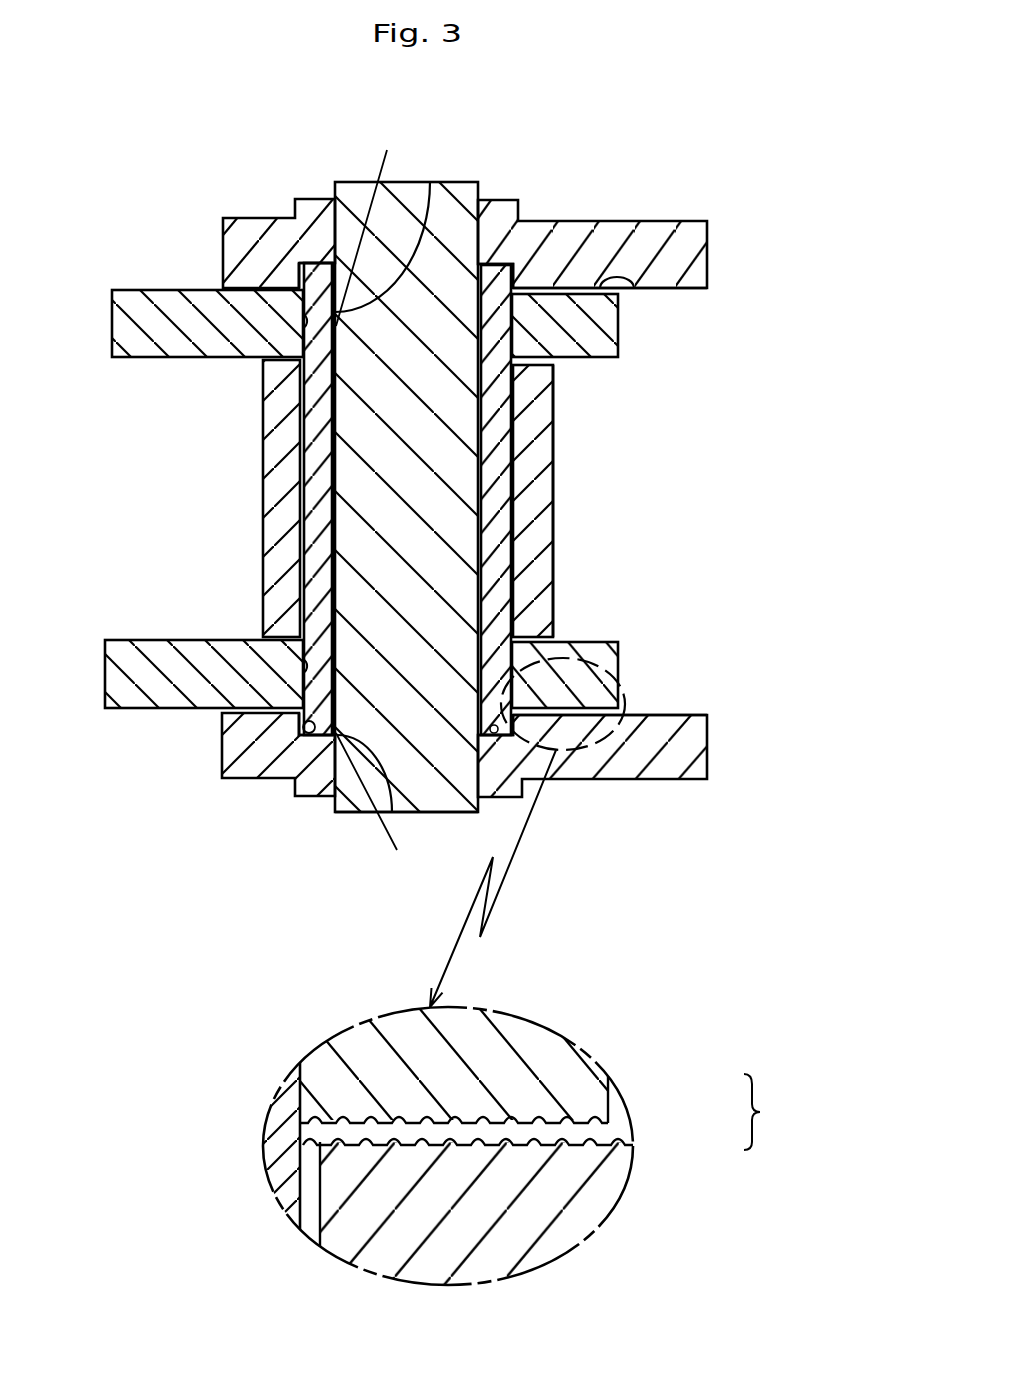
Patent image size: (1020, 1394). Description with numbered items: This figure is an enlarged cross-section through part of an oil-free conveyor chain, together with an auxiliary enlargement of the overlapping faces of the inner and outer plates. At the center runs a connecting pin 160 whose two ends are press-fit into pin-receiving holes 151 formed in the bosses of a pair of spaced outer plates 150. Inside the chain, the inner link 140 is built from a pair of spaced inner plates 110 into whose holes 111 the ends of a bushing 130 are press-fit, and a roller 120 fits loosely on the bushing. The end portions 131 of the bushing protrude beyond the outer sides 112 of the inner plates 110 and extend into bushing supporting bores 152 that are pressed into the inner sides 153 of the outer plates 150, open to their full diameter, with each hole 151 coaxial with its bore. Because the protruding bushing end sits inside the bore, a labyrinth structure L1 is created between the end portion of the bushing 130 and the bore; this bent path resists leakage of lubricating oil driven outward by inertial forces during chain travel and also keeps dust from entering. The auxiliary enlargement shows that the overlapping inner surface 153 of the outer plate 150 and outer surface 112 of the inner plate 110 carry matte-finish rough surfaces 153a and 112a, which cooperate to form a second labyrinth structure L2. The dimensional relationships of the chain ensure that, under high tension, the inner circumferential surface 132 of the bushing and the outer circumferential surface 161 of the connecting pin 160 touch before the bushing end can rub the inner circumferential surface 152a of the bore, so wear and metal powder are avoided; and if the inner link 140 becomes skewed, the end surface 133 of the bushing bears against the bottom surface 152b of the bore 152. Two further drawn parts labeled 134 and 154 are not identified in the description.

The inner plates 110 is at (590, 350).
The holes 111 is at (305, 323).
The outer sides of the inner plates 112 is at (634, 290).
The rough surface 112a is at (178, 709).
The rollers 120 is at (540, 540).
The bushings 130 is at (498, 485).
The end portions of the bushings 131 is at (304, 268).
The inner circumferential surface of the bushing 132 is at (401, 234).
The end surface of the bushing 133 is at (300, 485).
The right bushing sleeve 134 is at (505, 268).
The inner link 140 is at (678, 410).
The outer plates 150 is at (661, 234).
The pin-receiving holes 151 is at (336, 262).
The bushing supporting bores 152 is at (516, 277).
The inner circumferential surface of the bushing supporting bore 152a is at (302, 737).
The bottom surface of the bushing supporting bore 152b is at (498, 266).
The inner sides of the outer plates 153 is at (675, 291).
The rough surface 153a is at (703, 712).
The left flange 154 is at (260, 224).
The connecting pins 160 is at (435, 757).
The outer circumferential surface of the connecting pin 161 is at (333, 540).
The labyrinth structure L1 is at (372, 502).
The labyrinth structure L2 is at (768, 1112).